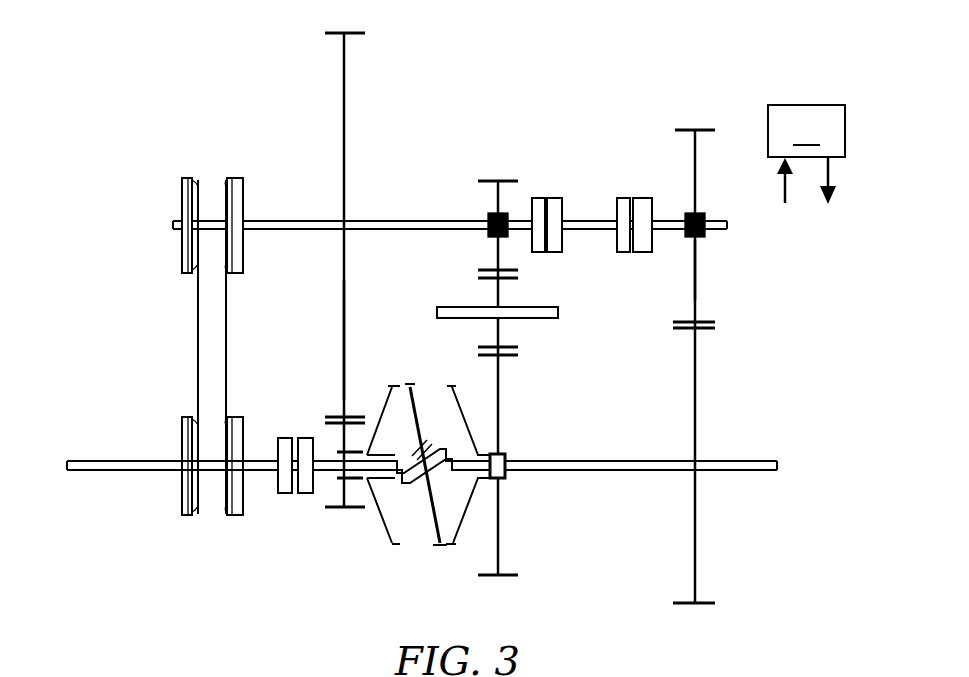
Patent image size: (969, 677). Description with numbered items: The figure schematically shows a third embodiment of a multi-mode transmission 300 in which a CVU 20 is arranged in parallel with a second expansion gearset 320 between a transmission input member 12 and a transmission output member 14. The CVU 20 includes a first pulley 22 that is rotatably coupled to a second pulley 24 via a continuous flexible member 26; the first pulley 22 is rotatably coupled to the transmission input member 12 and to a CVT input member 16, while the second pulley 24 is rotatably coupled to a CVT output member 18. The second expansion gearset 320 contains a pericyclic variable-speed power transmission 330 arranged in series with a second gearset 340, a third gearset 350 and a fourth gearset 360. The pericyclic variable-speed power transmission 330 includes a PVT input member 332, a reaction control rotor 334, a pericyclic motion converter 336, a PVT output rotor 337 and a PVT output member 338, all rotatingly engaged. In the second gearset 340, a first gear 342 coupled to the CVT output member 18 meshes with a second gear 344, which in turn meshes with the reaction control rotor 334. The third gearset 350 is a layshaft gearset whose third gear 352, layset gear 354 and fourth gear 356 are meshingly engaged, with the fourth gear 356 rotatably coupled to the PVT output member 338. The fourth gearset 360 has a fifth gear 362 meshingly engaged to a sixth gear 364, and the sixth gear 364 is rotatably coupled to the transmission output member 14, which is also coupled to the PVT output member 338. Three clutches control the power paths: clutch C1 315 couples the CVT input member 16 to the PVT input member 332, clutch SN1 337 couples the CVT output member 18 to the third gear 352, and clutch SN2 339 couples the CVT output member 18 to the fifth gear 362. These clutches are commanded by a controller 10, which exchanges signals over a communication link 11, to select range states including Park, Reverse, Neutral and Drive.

The controller 10 is at (806, 131).
The communication link 11 is at (829, 174).
The transmission input member 12 is at (95, 460).
The transmission output member 14 is at (713, 460).
The CVT input member 16 is at (276, 480).
The CVT output member 18 is at (300, 220).
The CVU 20 is at (214, 160).
The first pulley 22 is at (181, 440).
The second pulley 24 is at (181, 256).
The continuous flexible member 26 is at (196, 350).
The multi-mode transmission 300 is at (168, 132).
The clutch C1 315 is at (296, 495).
The second expansion gearset 320 is at (448, 93).
The pericyclic variable-speed power transmission 330 is at (450, 580).
The PVT input member 332 is at (420, 460).
The reaction control rotor 334 is at (390, 545).
The pericyclic motion converter 336 is at (430, 547).
The PVT output rotor 337 is at (548, 253).
The PVT output member 338 is at (508, 472).
The clutch SN2 339 is at (634, 197).
The second gearset 340 is at (357, 117).
The first gear 342 is at (343, 350).
The second gear 344 is at (343, 438).
The third gearset 350 is at (505, 165).
The third gear 352 is at (496, 208).
The layset gear 354 is at (496, 297).
The fourth gear 356 is at (496, 381).
The fourth gearset 360 is at (708, 113).
The fifth gear 362 is at (697, 270).
The sixth gear 364 is at (697, 378).